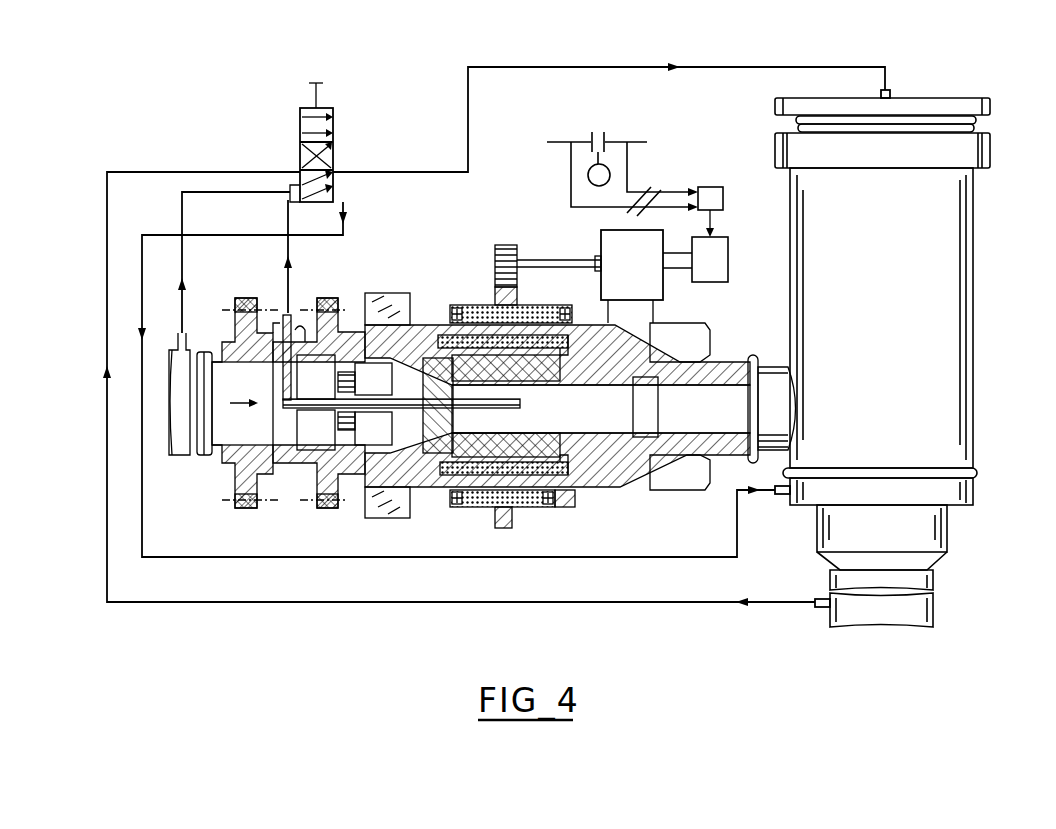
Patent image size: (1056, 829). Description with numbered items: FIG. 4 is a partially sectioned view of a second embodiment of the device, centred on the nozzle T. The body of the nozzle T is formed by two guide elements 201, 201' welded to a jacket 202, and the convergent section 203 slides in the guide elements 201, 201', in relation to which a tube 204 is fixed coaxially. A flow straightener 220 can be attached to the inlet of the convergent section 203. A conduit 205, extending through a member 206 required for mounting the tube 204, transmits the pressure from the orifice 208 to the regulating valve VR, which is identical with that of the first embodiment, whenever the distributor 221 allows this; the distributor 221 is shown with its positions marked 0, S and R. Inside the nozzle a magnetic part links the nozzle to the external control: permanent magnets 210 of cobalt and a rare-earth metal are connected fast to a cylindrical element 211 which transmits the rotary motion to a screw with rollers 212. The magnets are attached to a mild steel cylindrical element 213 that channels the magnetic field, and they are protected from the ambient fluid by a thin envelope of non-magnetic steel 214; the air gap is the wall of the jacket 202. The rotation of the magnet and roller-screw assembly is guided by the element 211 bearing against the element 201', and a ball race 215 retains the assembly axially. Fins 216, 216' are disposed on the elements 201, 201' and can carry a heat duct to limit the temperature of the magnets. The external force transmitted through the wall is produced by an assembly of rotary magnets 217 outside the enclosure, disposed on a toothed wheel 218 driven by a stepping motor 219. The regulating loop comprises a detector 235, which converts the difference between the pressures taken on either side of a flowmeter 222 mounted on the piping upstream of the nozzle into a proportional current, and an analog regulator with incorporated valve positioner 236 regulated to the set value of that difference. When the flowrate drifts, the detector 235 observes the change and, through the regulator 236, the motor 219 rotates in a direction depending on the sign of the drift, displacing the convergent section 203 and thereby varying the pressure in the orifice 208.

The distributor 221 is at (345, 145).
The valve open position 0 is at (300, 122).
The valve stop position S is at (333, 156).
The valve return position R is at (333, 186).
The flowmeter 222 is at (610, 135).
The detector 235 is at (714, 190).
The analog regulator with incorporated valve positioner 236 is at (722, 262).
The stepping motor 219 is at (652, 275).
The conduit 205 is at (276, 318).
The convergent section 203 is at (420, 320).
The permanent magnets 210 is at (455, 306).
The mild steel cylindrical element 213 is at (492, 300).
The thin envelope of non-magnetic steel 214 is at (521, 300).
The screw with rollers 212 is at (536, 314).
The cylindrical element 211 is at (563, 332).
The flow straightener 220 is at (340, 385).
The tube 204 is at (395, 400).
The orifice 208 is at (418, 386).
The ball race 215 is at (624, 409).
The member 206 is at (275, 482).
The fins 216 is at (341, 420).
The guide element 201 is at (476, 506).
The rotary magnets 217 is at (528, 506).
The jacket 202 is at (573, 492).
The guide element 201' is at (644, 497).
The fins 216' is at (693, 424).
The toothed wheel 218 is at (487, 527).
The nozzle T is at (610, 560).
The regulating valve VR is at (947, 415).